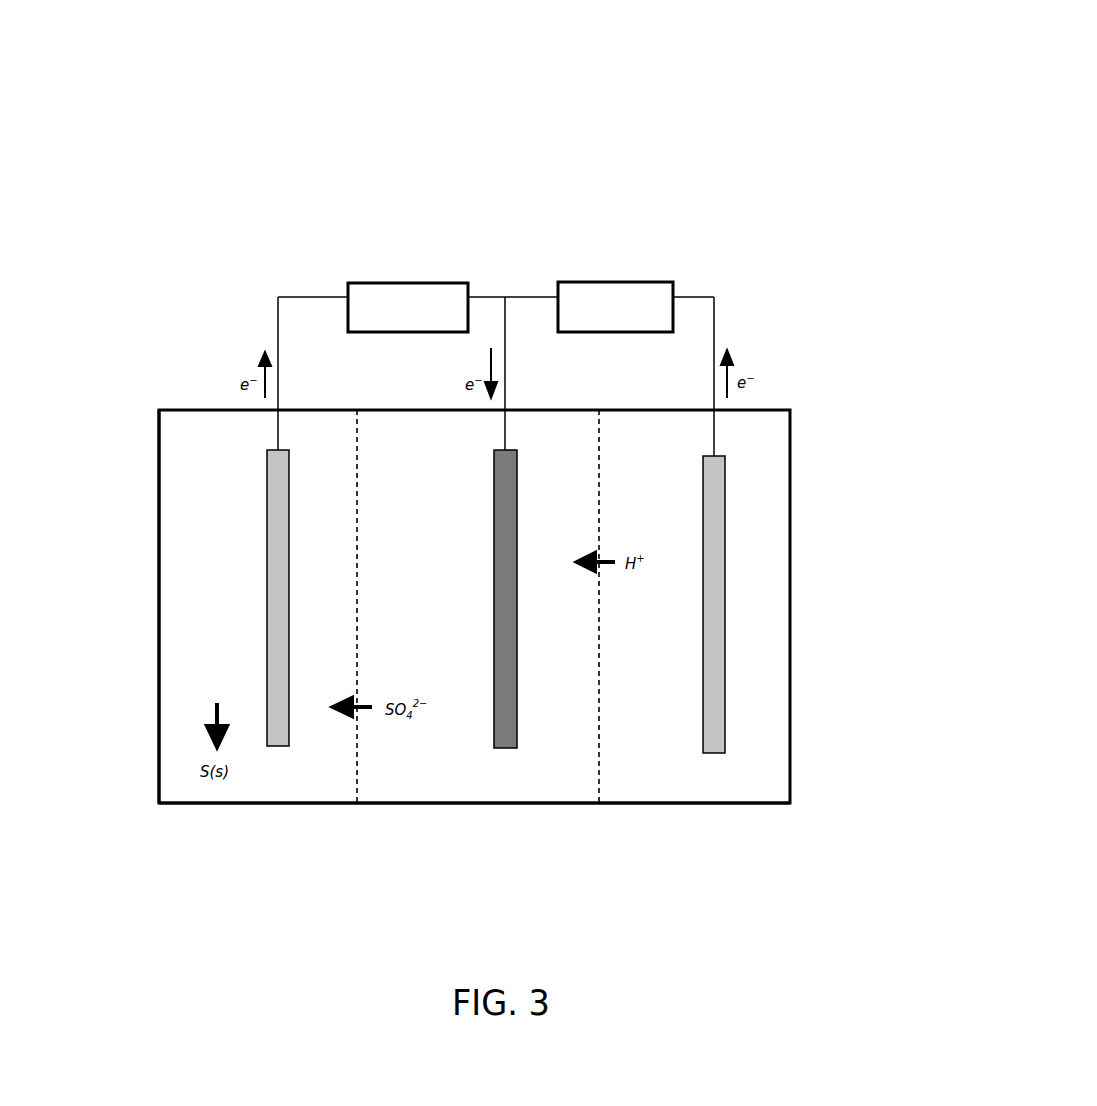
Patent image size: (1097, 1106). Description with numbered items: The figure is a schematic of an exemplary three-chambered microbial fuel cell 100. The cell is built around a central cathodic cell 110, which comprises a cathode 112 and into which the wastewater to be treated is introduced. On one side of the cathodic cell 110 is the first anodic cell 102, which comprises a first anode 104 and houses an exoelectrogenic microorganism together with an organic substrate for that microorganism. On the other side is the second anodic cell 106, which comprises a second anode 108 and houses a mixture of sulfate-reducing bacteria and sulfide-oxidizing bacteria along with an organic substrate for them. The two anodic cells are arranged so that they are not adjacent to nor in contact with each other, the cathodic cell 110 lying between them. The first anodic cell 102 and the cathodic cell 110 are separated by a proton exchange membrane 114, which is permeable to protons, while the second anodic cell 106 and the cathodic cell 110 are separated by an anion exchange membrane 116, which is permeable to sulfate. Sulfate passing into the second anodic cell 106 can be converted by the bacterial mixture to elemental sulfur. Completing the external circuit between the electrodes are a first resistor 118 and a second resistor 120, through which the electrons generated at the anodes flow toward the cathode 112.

The three-chambered microbial fuel cell 100 is at (866, 116).
The first anodic cell 102 is at (790, 477).
The first anode 104 is at (716, 697).
The second anodic cell 106 is at (158, 532).
The second anode 108 is at (277, 633).
The cathodic cell 110 is at (555, 803).
The cathode 112 is at (497, 727).
The proton exchange membrane 114 is at (600, 792).
The anion exchange membrane 116 is at (357, 792).
The first resistor 118 is at (373, 283).
The second resistor 120 is at (588, 283).